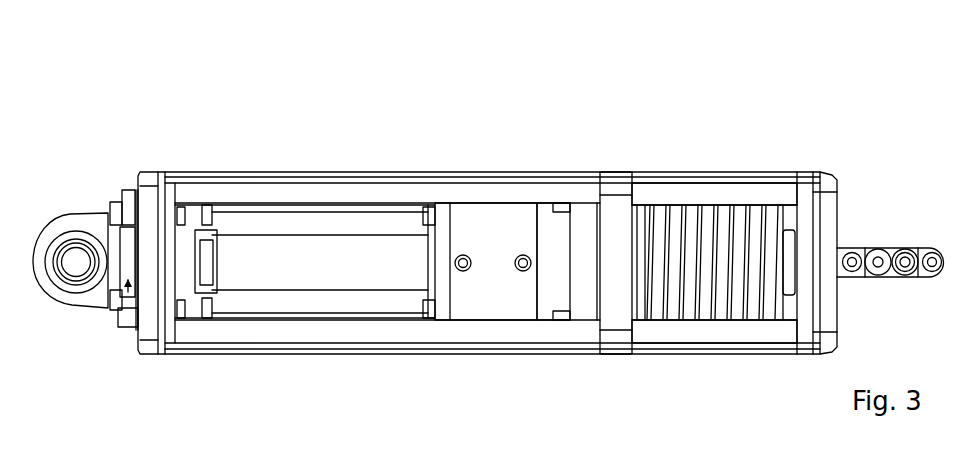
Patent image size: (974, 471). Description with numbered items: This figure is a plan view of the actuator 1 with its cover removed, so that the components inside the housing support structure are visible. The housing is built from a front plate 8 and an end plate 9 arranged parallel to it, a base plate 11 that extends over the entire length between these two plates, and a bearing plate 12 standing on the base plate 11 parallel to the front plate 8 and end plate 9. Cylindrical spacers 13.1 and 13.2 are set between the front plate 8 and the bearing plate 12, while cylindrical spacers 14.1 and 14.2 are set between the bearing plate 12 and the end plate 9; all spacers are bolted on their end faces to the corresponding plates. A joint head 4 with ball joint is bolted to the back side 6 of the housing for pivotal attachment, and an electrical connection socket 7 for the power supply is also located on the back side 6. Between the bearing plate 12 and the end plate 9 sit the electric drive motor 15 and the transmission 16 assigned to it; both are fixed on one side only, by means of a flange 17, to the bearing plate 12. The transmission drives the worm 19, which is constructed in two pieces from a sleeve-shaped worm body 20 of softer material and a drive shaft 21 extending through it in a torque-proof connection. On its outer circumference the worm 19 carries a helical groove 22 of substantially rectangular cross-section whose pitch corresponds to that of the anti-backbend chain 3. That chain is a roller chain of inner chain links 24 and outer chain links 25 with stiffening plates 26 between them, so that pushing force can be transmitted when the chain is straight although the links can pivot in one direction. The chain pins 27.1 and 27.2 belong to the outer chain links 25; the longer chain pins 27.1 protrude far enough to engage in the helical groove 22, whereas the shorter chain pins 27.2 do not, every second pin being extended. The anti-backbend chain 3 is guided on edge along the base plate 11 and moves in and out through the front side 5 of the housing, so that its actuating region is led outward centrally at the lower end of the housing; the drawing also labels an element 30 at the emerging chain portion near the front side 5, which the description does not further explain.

The actuator 1 is at (478, 104).
The anti-backbend chain 3 is at (937, 197).
The joint head 4 is at (60, 310).
The front side 5 is at (838, 202).
The back side 6 is at (135, 182).
The electrical connection socket 7 is at (122, 305).
The front plate 8 is at (826, 190).
The end plate 9 is at (145, 174).
The base plate 11 is at (268, 170).
The bearing plate 12 is at (618, 192).
The cylindrical spacer 13.1 is at (672, 197).
The cylindrical spacer 13.2 is at (718, 334).
The cylindrical spacer 14.1 is at (385, 198).
The cylindrical spacer 14.2 is at (327, 332).
The electric drive motor 15 is at (320, 260).
The transmission 16 is at (497, 220).
The flange 17 is at (582, 230).
The worm 19 is at (715, 222).
The worm body 20 is at (705, 318).
The drive shaft 21 is at (790, 300).
The helical groove 22 is at (757, 210).
The inner chain link 24 is at (928, 252).
The outer chain link 25 is at (897, 252).
The stiffening plate 26 is at (855, 252).
The chain pin 27.1 is at (878, 256).
The chain pin 27.2 is at (905, 270).
The connecting member 30 is at (880, 284).